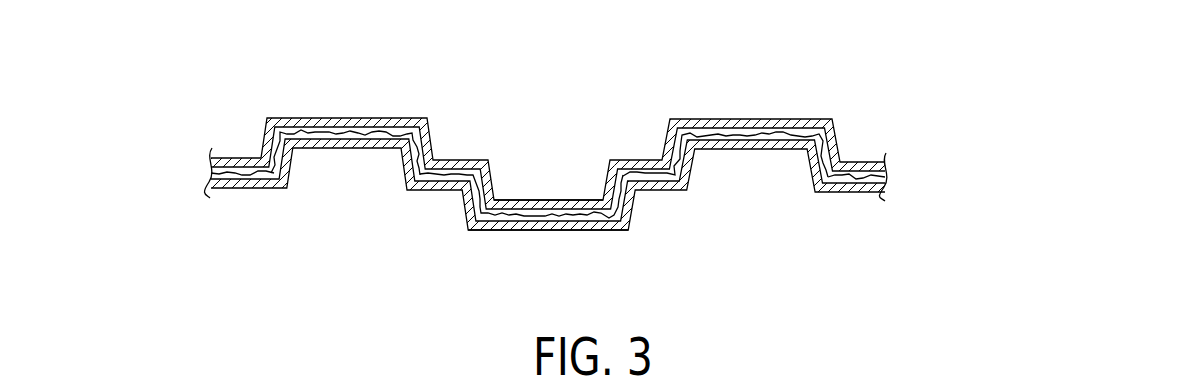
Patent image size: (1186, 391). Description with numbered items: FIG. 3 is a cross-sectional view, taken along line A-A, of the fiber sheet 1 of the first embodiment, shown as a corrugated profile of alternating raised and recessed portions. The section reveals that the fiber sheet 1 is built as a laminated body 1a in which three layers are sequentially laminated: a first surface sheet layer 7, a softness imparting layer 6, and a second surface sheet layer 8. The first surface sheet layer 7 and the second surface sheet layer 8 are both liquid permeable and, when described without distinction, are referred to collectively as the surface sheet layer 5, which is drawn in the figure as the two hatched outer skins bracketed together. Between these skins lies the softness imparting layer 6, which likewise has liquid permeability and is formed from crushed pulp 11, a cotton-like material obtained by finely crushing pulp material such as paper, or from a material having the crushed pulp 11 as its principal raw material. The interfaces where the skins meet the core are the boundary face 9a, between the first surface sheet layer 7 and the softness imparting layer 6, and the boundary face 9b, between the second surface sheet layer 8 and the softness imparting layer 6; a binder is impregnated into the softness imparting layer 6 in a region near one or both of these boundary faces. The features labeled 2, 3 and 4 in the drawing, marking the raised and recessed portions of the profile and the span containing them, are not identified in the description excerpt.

The fiber sheet 1 is at (842, 107).
The laminated body 1a is at (782, 118).
The ridge portion 2 is at (362, 117).
The groove portion 3 is at (562, 188).
The corrugated portion 4 is at (378, 36).
The surface sheet layer 5 is at (938, 148).
The softness imparting layer 6 is at (862, 172).
The first surface sheet layer 7 is at (887, 184).
The second surface sheet layer 8 is at (887, 164).
The boundary face 9a is at (582, 230).
The boundary face 9b is at (505, 200).
The crushed pulp 11 is at (733, 131).